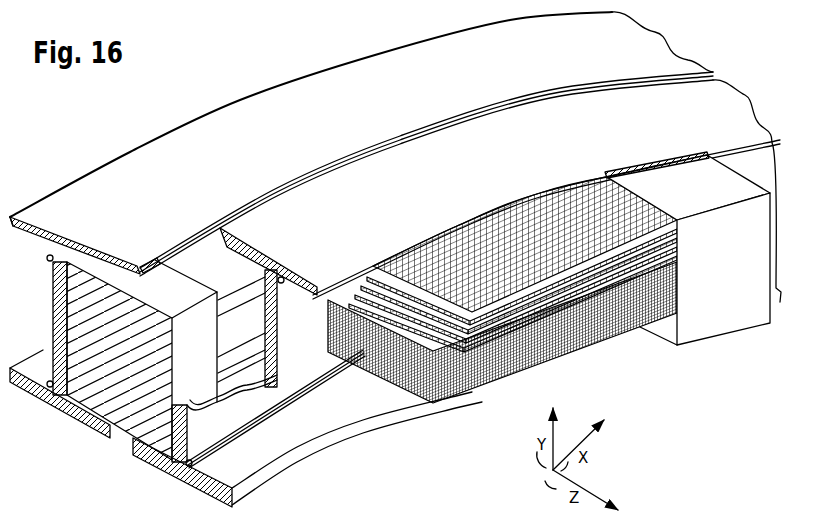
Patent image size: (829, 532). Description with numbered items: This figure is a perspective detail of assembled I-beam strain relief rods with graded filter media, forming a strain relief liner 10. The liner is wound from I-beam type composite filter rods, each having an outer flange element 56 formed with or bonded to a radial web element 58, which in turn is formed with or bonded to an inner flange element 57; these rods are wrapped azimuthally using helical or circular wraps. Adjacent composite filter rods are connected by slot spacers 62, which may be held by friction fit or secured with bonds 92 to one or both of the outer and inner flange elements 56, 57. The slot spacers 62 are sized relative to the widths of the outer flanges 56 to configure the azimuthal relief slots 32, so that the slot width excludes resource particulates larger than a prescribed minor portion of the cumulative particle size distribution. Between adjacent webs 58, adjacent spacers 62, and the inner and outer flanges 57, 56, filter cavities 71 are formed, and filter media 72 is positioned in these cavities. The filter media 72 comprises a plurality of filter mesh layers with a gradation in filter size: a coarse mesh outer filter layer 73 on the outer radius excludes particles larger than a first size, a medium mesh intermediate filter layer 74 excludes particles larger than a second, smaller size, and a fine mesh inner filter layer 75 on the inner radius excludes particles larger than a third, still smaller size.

The strain relief liner 10 is at (245, 83).
The azimuthal relief slot 32 is at (734, 71).
The outer flange element 56 is at (653, 50).
The inner flange element 57 is at (40, 373).
The radial web element 58 is at (60, 313).
The slot spacer 62 is at (695, 330).
The filter cavity 71 is at (210, 263).
The filter media 72 is at (483, 309).
The outer filter layer 73 is at (500, 210).
The intermediate filter layer 74 is at (363, 287).
The inner filter layer 75 is at (431, 404).
The bond 92 is at (128, 267).